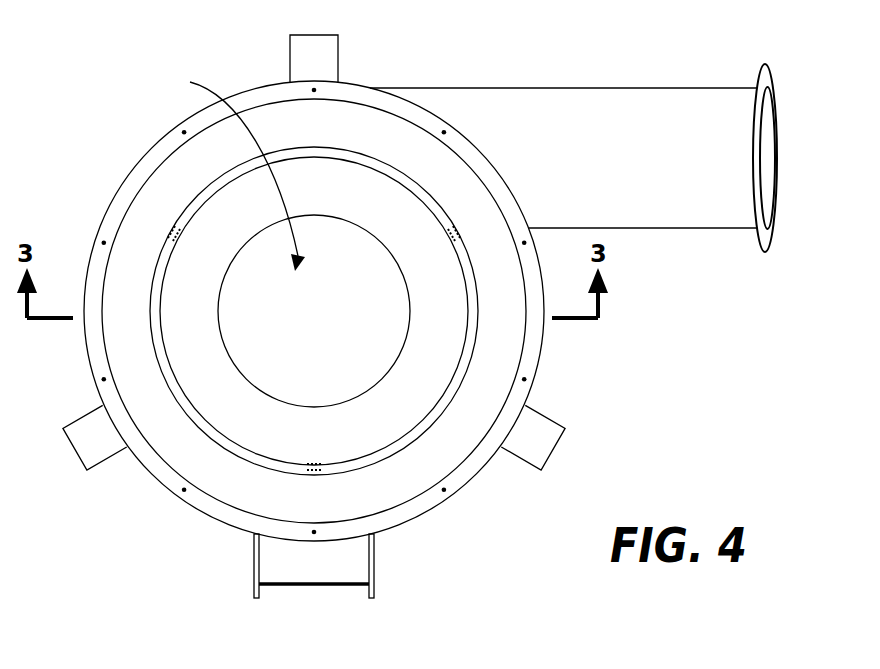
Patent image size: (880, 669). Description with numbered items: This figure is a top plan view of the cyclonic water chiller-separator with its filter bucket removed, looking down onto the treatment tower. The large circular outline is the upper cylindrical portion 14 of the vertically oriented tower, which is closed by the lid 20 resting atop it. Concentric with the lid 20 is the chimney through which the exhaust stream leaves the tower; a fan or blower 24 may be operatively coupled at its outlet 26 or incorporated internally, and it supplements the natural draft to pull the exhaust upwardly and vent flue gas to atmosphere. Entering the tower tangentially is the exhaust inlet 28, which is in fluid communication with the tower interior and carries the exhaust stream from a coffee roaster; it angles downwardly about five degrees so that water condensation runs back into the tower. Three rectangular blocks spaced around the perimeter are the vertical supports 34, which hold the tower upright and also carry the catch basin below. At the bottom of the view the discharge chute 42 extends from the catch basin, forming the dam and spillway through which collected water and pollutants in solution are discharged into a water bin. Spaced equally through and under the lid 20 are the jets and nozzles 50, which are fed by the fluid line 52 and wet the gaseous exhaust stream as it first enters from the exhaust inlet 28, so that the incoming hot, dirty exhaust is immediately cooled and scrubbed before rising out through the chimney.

The upper cylindrical portion 14 is at (87, 347).
The lid 20 is at (183, 456).
The fan or blower 24 is at (410, 312).
The outlet 26 is at (233, 170).
The exhaust inlet 28 is at (605, 88).
The vertical supports 34 is at (291, 61).
The discharge chute 42 is at (376, 570).
The jets and nozzles 50 is at (172, 230).
The fluid line 52 is at (157, 265).